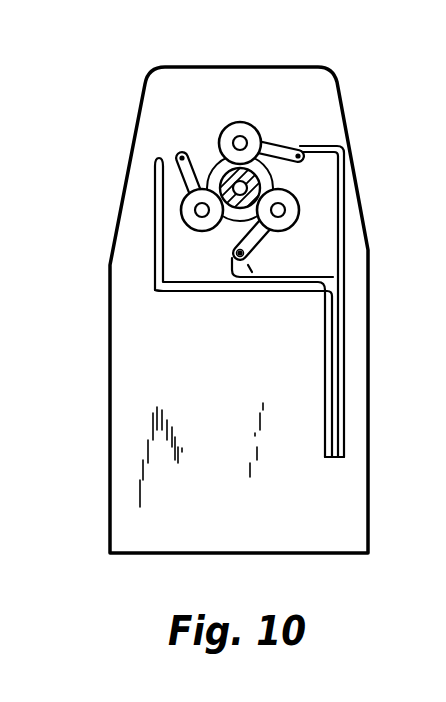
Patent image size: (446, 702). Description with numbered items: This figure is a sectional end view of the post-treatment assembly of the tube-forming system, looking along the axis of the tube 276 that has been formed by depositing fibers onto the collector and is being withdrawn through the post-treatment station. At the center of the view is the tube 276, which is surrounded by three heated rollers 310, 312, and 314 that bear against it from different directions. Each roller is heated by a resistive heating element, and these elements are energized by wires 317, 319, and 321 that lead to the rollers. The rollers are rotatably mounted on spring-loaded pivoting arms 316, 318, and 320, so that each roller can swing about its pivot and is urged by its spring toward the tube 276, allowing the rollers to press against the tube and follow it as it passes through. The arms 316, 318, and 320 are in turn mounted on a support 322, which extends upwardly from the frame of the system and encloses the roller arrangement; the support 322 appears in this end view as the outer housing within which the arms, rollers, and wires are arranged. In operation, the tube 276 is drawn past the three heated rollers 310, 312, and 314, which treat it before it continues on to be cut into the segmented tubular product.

The tube 276 is at (221, 165).
The heated roller 310 is at (252, 128).
The heated roller 312 is at (192, 222).
The heated roller 314 is at (293, 208).
The spring-loaded pivoting arm 316 is at (287, 147).
The wire 317 is at (341, 150).
The spring-loaded pivoting arm 318 is at (160, 170).
The wire 319 is at (155, 195).
The spring-loaded pivoting arm 320 is at (233, 246).
The wire 321 is at (262, 250).
The support 322 is at (368, 478).